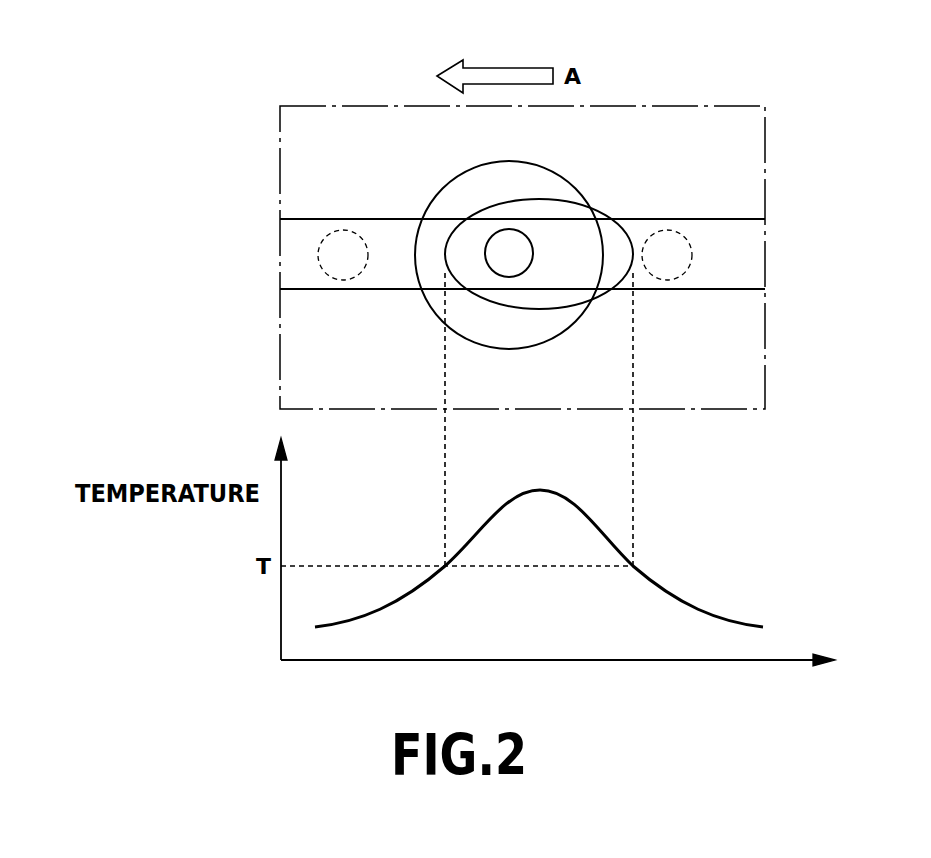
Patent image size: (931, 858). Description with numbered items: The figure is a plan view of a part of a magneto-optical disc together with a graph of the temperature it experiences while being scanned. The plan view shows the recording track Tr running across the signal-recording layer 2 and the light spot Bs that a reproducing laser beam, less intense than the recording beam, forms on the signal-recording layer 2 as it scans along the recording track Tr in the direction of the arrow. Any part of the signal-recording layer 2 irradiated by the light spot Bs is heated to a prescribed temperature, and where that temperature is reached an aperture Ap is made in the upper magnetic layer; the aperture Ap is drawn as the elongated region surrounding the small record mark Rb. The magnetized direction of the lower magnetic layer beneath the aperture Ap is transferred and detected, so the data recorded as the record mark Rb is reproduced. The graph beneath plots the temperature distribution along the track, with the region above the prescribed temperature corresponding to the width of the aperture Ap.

The signal-recording layer 2 is at (747, 133).
The recording track Tr is at (733, 225).
The light spot Bs is at (438, 193).
The aperture Ap is at (603, 212).
The record mark Rb is at (535, 245).